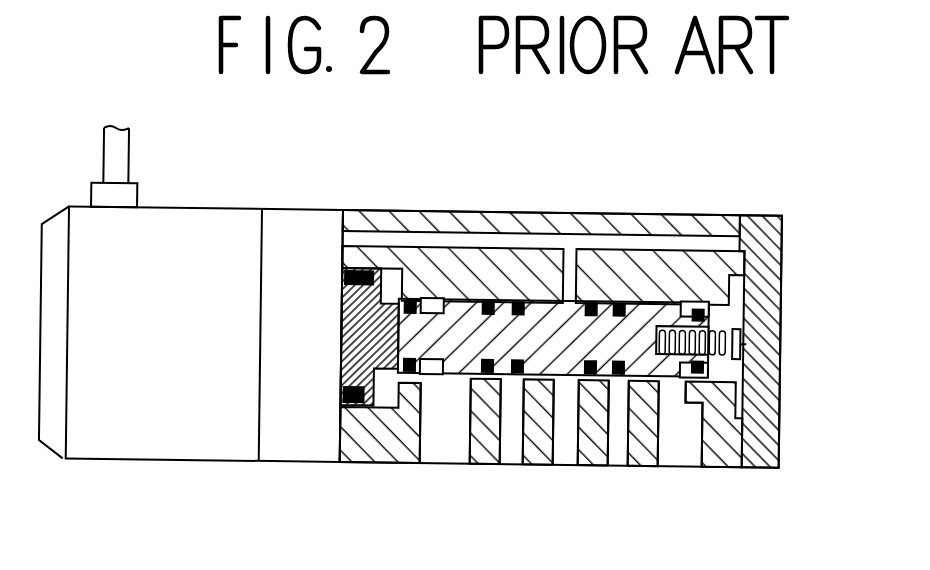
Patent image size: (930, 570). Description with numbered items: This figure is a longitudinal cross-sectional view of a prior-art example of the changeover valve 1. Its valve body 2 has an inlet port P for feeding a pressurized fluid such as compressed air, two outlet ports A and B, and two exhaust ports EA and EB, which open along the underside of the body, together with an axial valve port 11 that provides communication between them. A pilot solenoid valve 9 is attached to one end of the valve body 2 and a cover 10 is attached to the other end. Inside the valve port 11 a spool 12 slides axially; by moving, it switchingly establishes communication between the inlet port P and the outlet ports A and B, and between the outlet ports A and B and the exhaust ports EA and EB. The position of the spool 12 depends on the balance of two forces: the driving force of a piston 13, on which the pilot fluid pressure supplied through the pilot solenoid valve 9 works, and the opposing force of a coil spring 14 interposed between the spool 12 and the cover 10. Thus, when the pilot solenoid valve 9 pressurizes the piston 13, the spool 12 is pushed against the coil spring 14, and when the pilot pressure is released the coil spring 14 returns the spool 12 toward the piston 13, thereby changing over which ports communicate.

The changeover valve 1 is at (740, 175).
The valve body 2 is at (618, 216).
The pilot solenoid valve 9 is at (222, 212).
The cover 10 is at (774, 332).
The valve port 11 is at (680, 303).
The spool 12 is at (533, 330).
The piston 13 is at (383, 268).
The coil spring 14 is at (752, 308).
The exhaust port EA is at (445, 458).
The outlet port A is at (515, 460).
The inlet port P is at (570, 460).
The outlet port B is at (620, 463).
The exhaust port EB is at (687, 462).